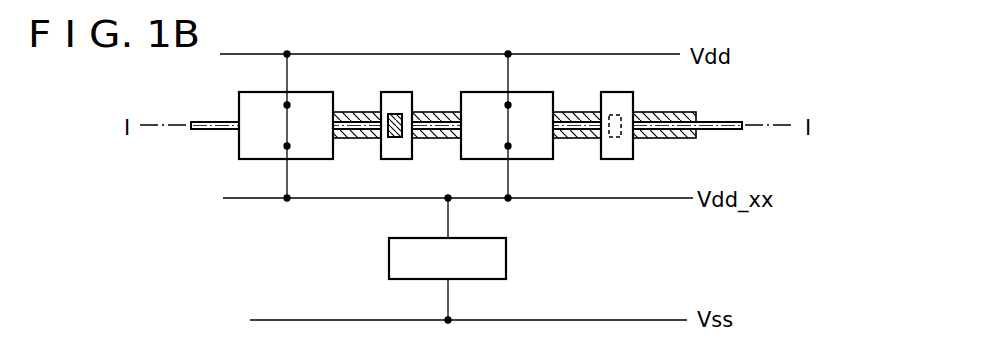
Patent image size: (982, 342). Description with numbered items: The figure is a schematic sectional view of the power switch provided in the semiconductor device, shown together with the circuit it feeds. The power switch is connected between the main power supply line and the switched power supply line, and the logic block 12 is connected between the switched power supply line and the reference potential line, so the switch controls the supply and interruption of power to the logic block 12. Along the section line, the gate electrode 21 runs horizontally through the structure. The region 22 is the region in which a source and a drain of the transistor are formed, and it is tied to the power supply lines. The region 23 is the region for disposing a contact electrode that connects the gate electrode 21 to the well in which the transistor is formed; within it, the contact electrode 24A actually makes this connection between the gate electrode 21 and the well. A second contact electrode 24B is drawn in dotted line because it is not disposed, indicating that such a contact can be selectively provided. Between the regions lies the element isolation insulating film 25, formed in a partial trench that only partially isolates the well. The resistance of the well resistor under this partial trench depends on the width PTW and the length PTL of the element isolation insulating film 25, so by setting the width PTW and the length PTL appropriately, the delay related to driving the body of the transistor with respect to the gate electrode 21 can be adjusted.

The logic block 12 is at (507, 255).
The gate electrode 21 is at (210, 132).
The source/drain region 22 is at (252, 92).
The contact electrode disposing region 23 is at (400, 92).
The contact electrode 24A is at (400, 138).
The contact electrode 24B is at (616, 138).
The element isolation insulating film 25 is at (362, 140).
The length of the element isolation insulating film PTL is at (379, 101).
The width of the element isolation insulating film PTW is at (324, 112).